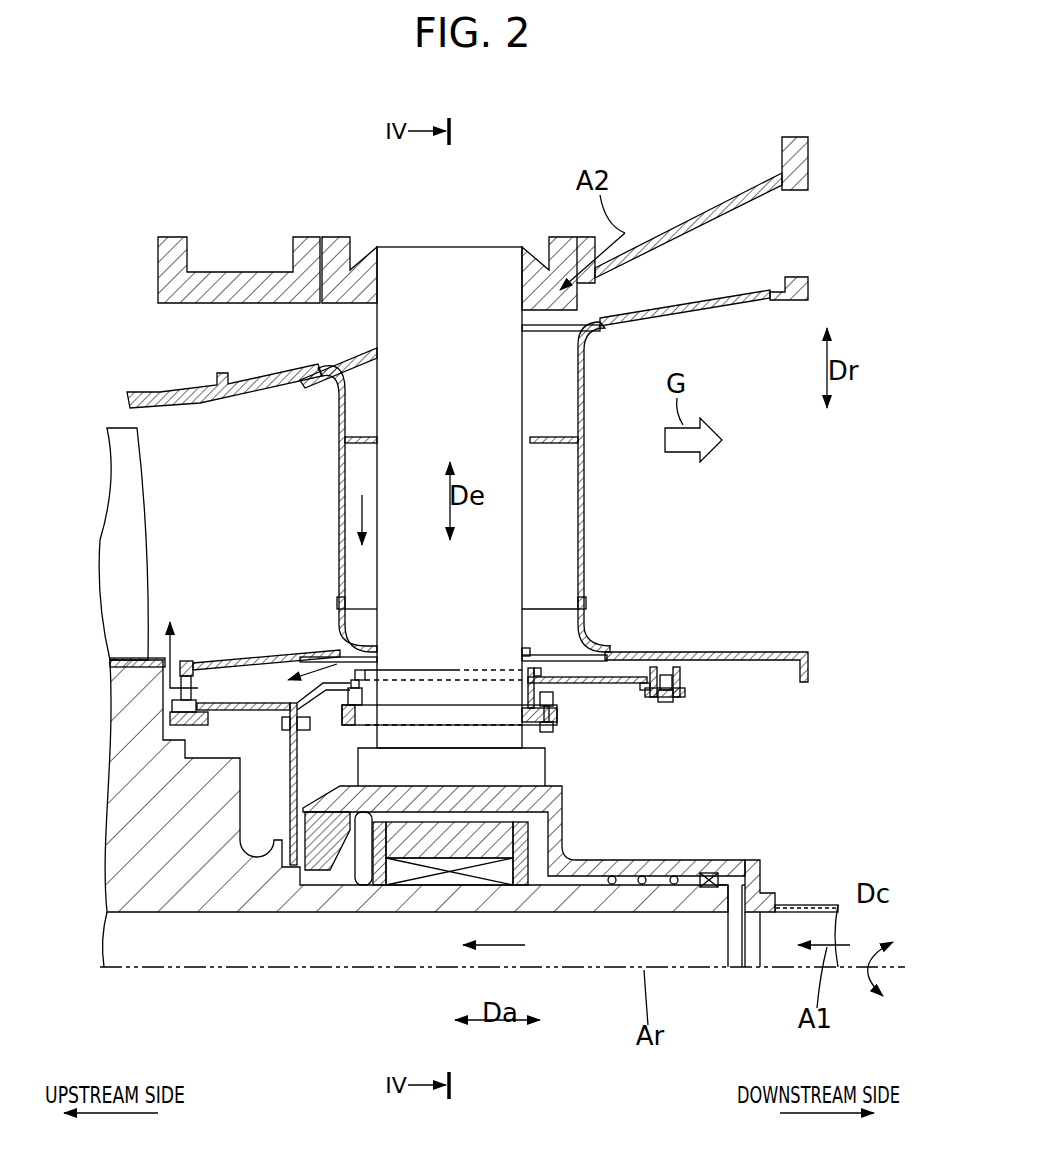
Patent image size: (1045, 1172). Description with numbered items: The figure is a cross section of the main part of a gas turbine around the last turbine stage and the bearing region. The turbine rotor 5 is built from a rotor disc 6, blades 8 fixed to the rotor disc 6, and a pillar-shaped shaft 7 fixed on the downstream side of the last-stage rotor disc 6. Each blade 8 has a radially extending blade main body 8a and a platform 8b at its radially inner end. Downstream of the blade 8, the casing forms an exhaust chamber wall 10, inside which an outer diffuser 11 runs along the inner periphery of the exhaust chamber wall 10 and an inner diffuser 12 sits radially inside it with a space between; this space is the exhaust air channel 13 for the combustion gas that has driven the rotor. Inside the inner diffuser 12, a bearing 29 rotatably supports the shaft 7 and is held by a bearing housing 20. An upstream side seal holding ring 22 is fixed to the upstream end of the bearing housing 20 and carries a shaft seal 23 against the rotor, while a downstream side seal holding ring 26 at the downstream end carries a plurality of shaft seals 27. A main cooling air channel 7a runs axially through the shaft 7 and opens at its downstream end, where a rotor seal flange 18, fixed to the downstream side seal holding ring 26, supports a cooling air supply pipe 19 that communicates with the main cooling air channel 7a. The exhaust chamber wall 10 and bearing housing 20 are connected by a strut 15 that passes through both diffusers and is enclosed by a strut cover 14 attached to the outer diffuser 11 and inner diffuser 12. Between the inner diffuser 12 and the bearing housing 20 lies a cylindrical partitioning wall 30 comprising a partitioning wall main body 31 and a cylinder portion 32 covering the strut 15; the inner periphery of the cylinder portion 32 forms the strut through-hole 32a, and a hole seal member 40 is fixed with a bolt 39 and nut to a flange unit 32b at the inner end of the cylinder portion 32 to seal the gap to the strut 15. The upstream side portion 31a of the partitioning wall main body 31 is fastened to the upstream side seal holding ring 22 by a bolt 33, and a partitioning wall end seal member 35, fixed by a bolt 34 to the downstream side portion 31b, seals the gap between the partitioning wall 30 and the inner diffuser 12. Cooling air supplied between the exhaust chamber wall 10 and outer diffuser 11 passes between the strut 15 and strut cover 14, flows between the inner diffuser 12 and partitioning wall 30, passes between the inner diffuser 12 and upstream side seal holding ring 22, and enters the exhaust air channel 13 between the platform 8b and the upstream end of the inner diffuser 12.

The turbine rotor 5 is at (415, 864).
The rotor disc 6 is at (176, 900).
The shaft 7 is at (245, 900).
The main cooling air channel 7a is at (592, 938).
The blade 8 is at (167, 547).
The blade main body 8a is at (122, 540).
The platform 8b is at (125, 660).
The exhaust chamber wall 10 is at (340, 240).
The outer diffuser 11 is at (258, 383).
The inner diffuser 12 is at (735, 652).
The exhaust air channel 13 is at (665, 350).
The strut cover 14 is at (345, 490).
The strut 15 is at (450, 265).
The rotor seal flange 18 is at (752, 878).
The cooling air supply pipe 19 is at (808, 905).
The bearing housing 20 is at (412, 807).
The upstream side seal holding ring 22 is at (295, 822).
The shaft seal 23 is at (292, 880).
The downstream side seal holding ring 26 is at (708, 872).
The shaft seal 27 is at (716, 887).
The bearing 29 is at (445, 882).
The partitioning wall 30 is at (471, 614).
The partitioning wall main body 31 is at (471, 665).
The upstream side portion 31a is at (305, 700).
The downstream side portion 31b is at (638, 700).
The cylinder portion 32 is at (585, 597).
The strut through-hole 32a is at (520, 650).
The flange unit 32b is at (556, 700).
The bolt 33 is at (283, 725).
The bolt 34 is at (683, 697).
The partitioning wall end seal member 35 is at (683, 680).
The bolt 39 is at (356, 688).
The hole seal member 40 is at (556, 722).